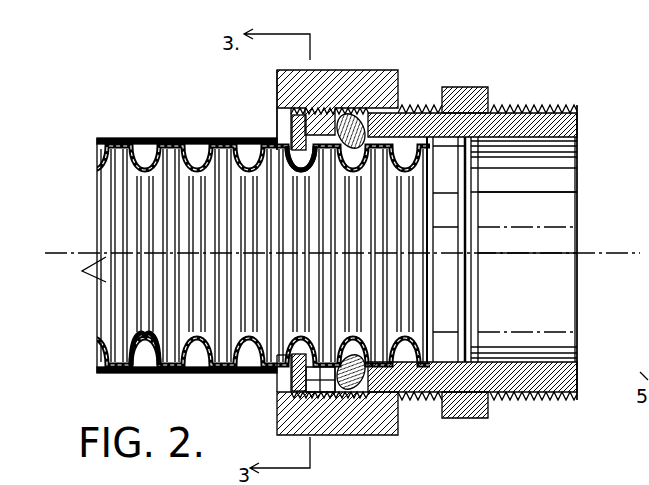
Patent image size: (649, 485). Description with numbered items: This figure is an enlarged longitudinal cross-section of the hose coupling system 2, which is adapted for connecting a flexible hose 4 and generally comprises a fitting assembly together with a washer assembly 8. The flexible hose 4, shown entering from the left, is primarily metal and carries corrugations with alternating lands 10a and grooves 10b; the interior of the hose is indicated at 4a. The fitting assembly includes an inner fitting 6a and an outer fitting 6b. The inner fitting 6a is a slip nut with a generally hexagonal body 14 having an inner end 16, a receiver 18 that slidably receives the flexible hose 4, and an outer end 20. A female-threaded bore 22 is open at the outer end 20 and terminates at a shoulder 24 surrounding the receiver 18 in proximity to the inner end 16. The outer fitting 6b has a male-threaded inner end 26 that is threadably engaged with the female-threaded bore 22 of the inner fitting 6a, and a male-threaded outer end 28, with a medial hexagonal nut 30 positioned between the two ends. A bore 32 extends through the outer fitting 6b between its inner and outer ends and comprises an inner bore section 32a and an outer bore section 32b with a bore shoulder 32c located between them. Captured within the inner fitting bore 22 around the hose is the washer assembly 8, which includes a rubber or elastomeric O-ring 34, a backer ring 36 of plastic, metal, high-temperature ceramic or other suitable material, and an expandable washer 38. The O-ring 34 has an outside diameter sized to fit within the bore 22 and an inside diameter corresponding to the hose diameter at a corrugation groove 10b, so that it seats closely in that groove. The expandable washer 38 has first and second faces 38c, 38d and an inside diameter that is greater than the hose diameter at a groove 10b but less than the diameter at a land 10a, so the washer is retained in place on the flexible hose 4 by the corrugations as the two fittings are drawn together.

The hose coupling system 2 is at (497, 67).
The flexible hose 4 is at (100, 139).
The hose bore 4a is at (432, 307).
The inner fitting 6a is at (277, 72).
The outer fitting 6b is at (572, 401).
The washer assembly 8 is at (301, 170).
The lands 10a is at (134, 354).
The grooves 10b is at (153, 355).
The hexagonal body 14 is at (393, 437).
The inner end 16 is at (278, 425).
The receiver 18 is at (290, 368).
The outer end 20 is at (418, 402).
The female-threaded bore 22 is at (412, 108).
The shoulder 24 is at (292, 114).
The male-threaded inner end 26 is at (354, 126).
The male-threaded outer end 28 is at (578, 112).
The medial hexagonal nut 30 is at (489, 419).
The bore 32 is at (560, 160).
The inner bore section 32a is at (440, 155).
The outer bore section 32b is at (535, 278).
The bore shoulder 32c is at (478, 204).
The O-ring 34 is at (350, 352).
The backer ring 36 is at (332, 346).
The expandable washer 38 is at (300, 345).
The first face 38c is at (306, 381).
The second face 38d is at (320, 395).